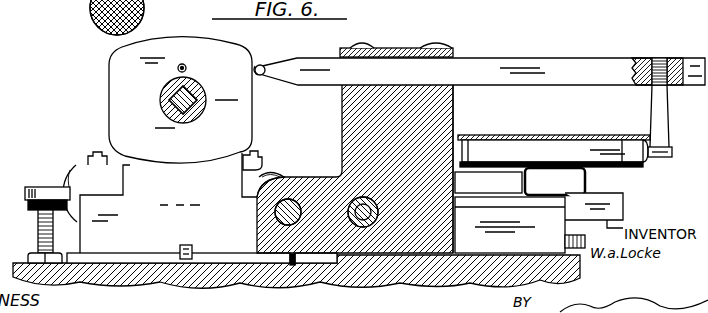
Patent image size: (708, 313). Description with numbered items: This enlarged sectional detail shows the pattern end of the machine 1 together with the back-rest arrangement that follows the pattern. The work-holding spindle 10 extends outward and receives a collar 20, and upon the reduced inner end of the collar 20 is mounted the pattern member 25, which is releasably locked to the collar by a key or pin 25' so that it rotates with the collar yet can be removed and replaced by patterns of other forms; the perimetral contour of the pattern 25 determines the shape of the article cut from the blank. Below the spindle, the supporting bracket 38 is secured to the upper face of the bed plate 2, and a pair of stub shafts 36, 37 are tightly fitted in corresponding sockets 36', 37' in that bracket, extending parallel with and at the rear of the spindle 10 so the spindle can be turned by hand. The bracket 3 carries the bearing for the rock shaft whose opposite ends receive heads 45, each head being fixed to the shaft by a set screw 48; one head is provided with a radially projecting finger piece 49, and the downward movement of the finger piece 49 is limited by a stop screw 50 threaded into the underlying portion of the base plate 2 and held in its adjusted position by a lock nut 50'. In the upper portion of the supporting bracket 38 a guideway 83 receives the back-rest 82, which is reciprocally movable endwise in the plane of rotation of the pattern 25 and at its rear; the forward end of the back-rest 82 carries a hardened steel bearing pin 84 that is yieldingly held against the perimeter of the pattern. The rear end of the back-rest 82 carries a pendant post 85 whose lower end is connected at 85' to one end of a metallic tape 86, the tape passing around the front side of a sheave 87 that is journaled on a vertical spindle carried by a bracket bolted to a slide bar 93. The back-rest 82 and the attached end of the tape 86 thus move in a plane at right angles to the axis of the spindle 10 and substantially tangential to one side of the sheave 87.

The machine 1 is at (122, 72).
The bed plate 2 is at (403, 264).
The bracket 3 is at (168, 203).
The work-holding spindle 10 is at (198, 93).
The collar 20 is at (168, 98).
The pattern member 25 is at (157, 100).
The key or pin 25' is at (191, 57).
The stub shaft 36 is at (363, 253).
The socket 36' is at (344, 256).
The stub shaft 37 is at (256, 199).
The socket 37' is at (285, 254).
The supporting bracket 38 is at (454, 113).
The head 45 is at (84, 173).
The set screw 48 is at (95, 153).
The finger piece 49 is at (42, 190).
The stop screw 50 is at (34, 226).
The lock nut 50' is at (32, 250).
The back-rest 82 is at (493, 67).
The guideway 83 is at (363, 88).
The bearing pin 84 is at (260, 65).
The pendant post 85 is at (676, 102).
The connection 85' is at (664, 164).
The metallic tape 86 is at (636, 147).
The sheave 87 is at (563, 136).
The slide bar 93 is at (624, 204).